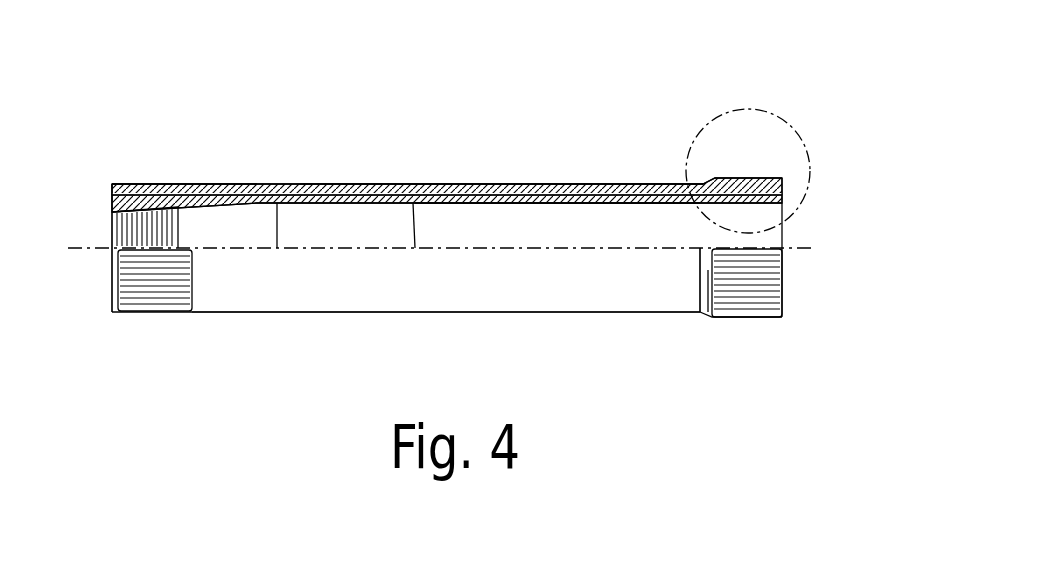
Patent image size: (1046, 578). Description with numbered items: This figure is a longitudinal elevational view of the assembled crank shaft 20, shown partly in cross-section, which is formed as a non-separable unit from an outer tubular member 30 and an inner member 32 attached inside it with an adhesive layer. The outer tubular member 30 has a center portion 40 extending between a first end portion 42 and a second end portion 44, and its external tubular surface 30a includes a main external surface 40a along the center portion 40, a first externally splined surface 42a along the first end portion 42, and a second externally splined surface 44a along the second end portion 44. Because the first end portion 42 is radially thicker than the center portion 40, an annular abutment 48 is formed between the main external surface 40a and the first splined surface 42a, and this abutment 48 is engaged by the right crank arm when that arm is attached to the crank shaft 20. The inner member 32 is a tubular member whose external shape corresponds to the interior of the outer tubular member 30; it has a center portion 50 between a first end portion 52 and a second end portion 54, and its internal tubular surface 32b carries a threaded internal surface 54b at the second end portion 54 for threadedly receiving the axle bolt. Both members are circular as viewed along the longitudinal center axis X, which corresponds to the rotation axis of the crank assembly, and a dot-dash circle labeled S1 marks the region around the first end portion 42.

The crank shaft 20 is at (583, 125).
The outer tubular member 30 is at (590, 178).
The external tubular surface 30a is at (258, 184).
The inner member 32 is at (590, 208).
The internal tubular surface 32b is at (346, 238).
The center portion 40 is at (442, 184).
The main external surface 40a is at (350, 293).
The first end portion 42 is at (750, 184).
The first externally splined surface 42a is at (750, 275).
The second end portion 44 is at (130, 184).
The second externally splined surface 44a is at (122, 312).
The annular abutment 48 is at (702, 313).
The center portion 50 is at (507, 184).
The first end portion 52 is at (748, 203).
The second end portion 54 is at (153, 184).
The threaded internal surface 54b is at (112, 226).
The longitudinal center axis X is at (410, 184).
The detail region S1 is at (773, 112).